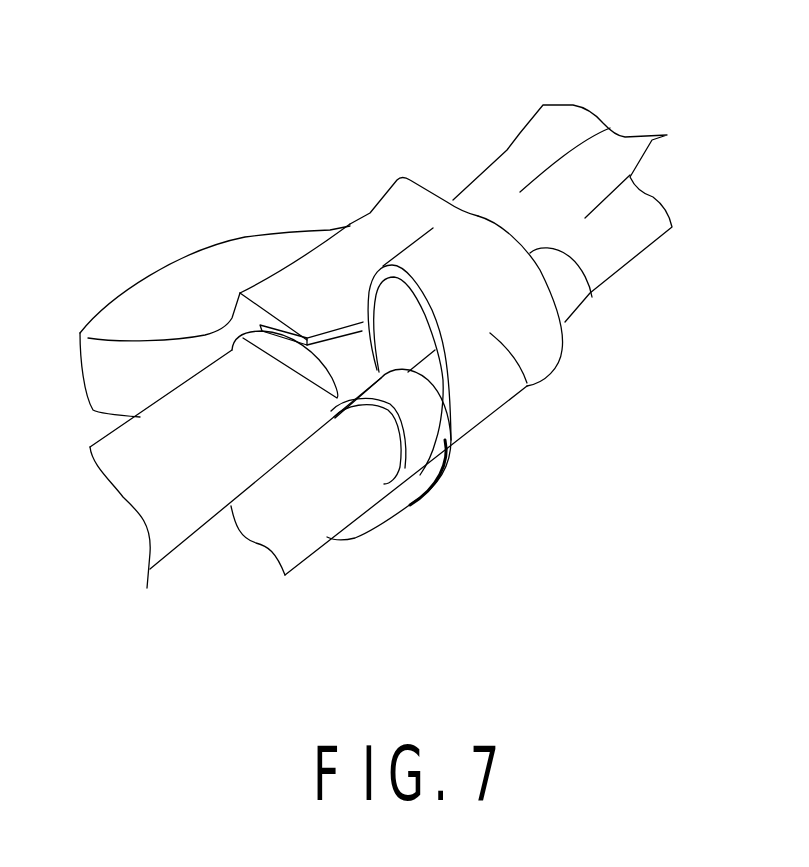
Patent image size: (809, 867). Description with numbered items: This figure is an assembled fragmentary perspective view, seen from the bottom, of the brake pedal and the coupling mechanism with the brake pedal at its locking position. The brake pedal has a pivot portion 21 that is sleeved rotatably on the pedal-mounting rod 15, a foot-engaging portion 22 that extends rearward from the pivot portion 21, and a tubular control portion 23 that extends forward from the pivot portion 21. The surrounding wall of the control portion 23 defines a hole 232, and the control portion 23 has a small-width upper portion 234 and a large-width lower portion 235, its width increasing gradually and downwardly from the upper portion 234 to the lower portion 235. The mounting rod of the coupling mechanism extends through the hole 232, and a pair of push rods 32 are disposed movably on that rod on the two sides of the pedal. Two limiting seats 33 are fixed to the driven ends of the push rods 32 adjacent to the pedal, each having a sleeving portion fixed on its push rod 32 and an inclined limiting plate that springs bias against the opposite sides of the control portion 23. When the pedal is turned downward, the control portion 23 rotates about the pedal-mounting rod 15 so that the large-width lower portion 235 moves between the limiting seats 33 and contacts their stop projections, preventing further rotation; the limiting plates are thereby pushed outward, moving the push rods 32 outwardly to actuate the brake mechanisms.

The pedal-mounting rod 15 is at (188, 490).
The pivot portion 21 is at (348, 243).
The foot-engaging portion 22 is at (202, 280).
The tubular control portion 23 is at (527, 388).
The hole 232 is at (397, 303).
The small-width upper portion 234 is at (615, 134).
The large-width lower portion 235 is at (462, 430).
The push rods 32 is at (337, 497).
The limiting seats 33 is at (570, 283).